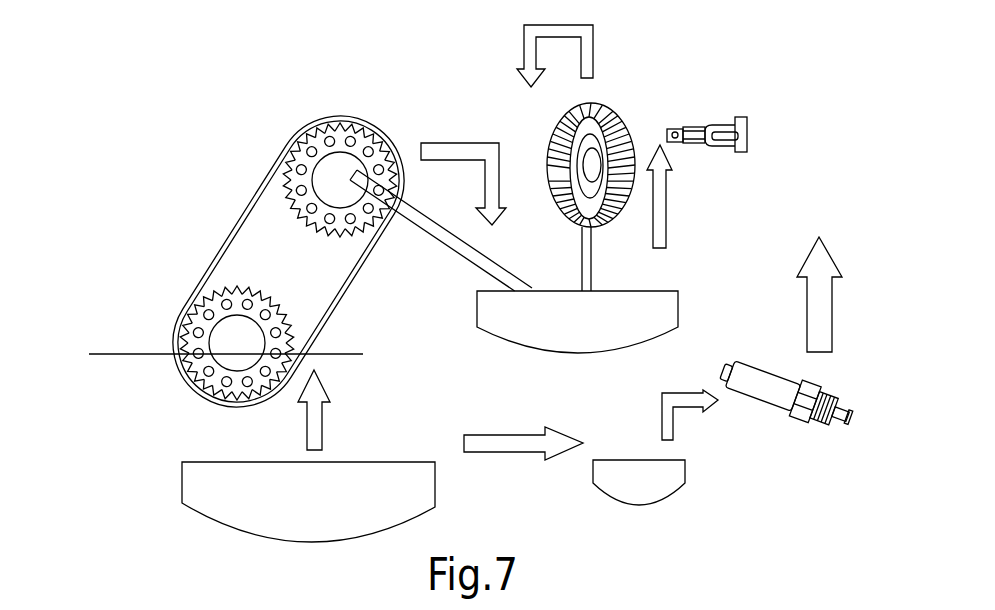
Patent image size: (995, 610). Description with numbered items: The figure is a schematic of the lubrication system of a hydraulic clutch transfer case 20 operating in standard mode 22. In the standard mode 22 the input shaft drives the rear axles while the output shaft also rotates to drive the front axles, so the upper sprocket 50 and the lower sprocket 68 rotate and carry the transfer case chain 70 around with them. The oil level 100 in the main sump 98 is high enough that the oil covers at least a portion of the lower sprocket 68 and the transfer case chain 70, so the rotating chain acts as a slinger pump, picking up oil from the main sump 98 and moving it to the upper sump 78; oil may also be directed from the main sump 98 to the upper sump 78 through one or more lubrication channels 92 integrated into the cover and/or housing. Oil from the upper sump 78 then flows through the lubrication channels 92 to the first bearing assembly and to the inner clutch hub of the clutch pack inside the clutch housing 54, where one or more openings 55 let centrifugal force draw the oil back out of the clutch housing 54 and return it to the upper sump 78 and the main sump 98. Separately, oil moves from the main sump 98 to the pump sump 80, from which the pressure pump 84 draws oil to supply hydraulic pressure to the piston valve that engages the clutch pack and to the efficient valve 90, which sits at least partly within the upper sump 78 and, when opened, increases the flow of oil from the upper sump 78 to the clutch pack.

The hydraulic clutch transfer case 20 is at (252, 127).
The standard mode 22 is at (718, 46).
The upper sprocket 50 is at (325, 143).
The clutch housing 54 is at (607, 112).
The openings 55 is at (558, 187).
The lower sprocket 68 is at (200, 325).
The transfer case chain 70 is at (246, 215).
The upper sump 78 is at (592, 347).
The pump sump 80 is at (656, 494).
The pressure pump 84 is at (772, 392).
The efficient valve 90 is at (740, 117).
The lubrication channels 92 is at (440, 240).
The main sump 98 is at (318, 511).
The oil level 100 is at (125, 354).